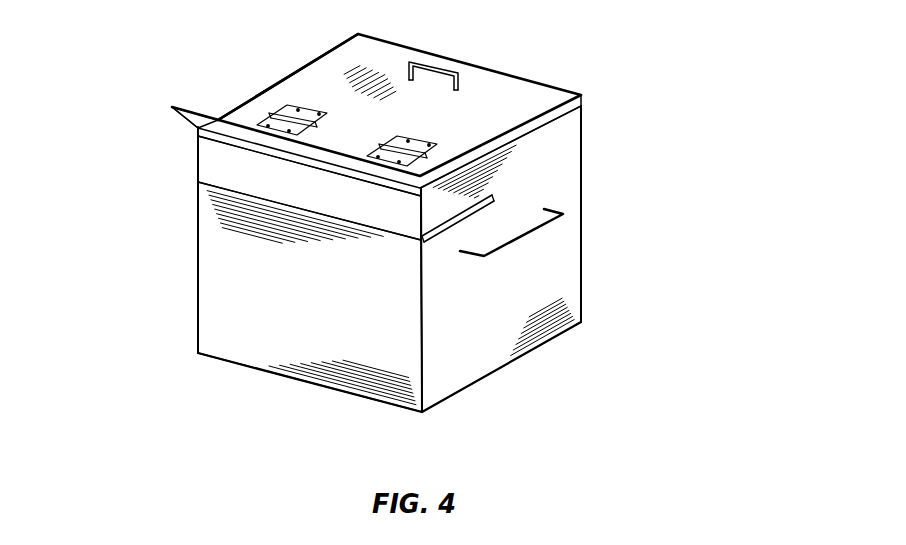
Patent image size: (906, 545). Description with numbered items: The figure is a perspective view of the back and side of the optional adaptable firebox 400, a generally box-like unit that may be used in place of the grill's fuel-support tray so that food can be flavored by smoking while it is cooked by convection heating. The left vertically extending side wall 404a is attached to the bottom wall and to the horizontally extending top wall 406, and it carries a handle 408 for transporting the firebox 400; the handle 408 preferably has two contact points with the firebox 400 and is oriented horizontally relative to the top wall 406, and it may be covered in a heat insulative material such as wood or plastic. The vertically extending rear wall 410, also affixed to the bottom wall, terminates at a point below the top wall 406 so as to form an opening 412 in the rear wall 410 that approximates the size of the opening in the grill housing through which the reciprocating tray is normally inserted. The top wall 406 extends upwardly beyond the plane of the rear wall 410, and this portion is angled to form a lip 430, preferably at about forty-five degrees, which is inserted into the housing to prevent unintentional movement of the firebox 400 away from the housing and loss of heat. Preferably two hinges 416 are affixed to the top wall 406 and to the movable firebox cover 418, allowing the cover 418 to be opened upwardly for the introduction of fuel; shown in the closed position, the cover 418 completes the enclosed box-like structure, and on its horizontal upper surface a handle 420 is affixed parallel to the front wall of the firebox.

The firebox 400 is at (700, 82).
The left side wall 404a is at (553, 259).
The top wall 406 is at (249, 77).
The handle 408 is at (548, 216).
The rear wall 410 is at (267, 297).
The opening 412 is at (260, 189).
The hinges 416 is at (312, 91).
The firebox cover 418 is at (411, 111).
The handle 420 is at (479, 54).
The lip 430 is at (134, 100).